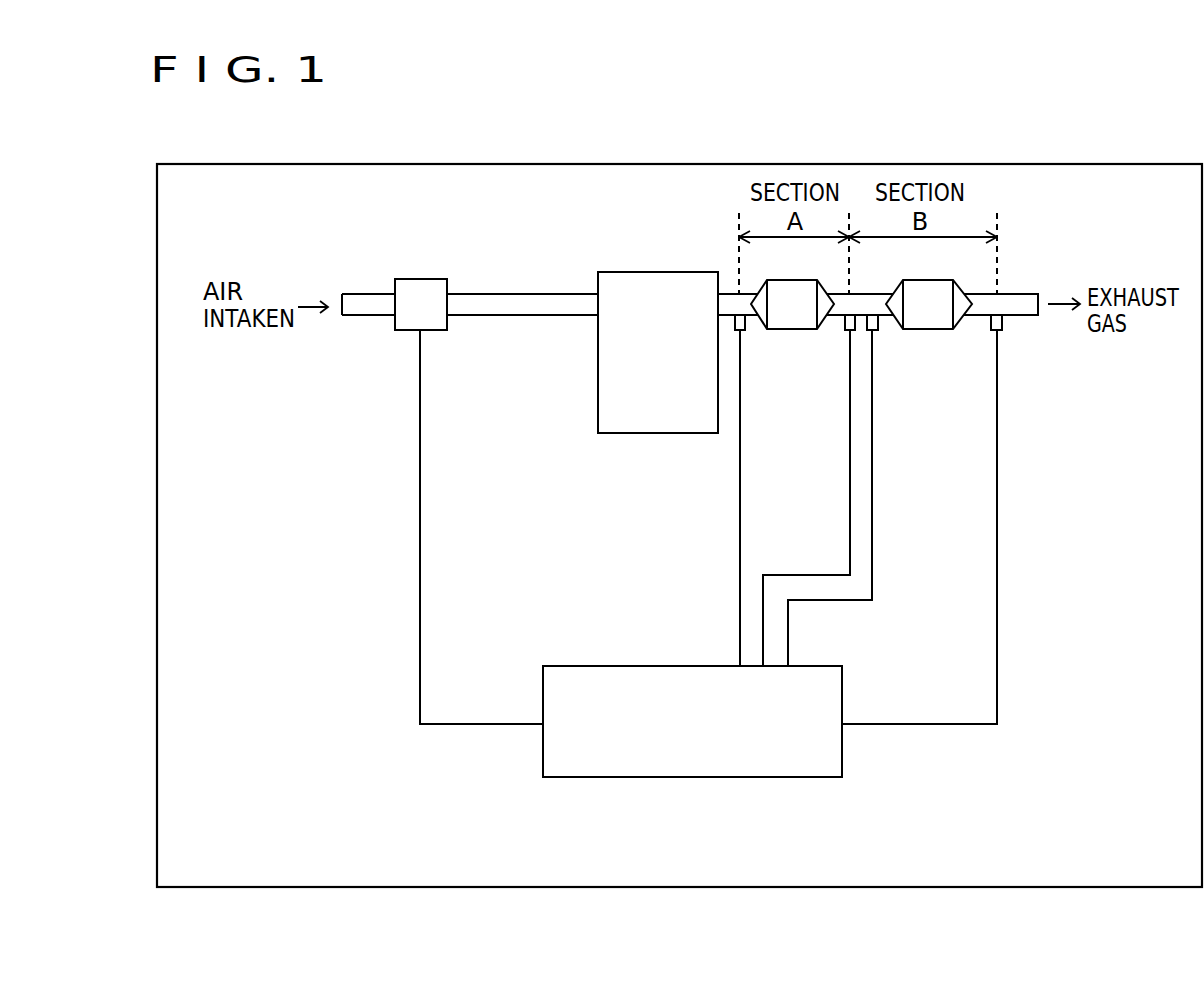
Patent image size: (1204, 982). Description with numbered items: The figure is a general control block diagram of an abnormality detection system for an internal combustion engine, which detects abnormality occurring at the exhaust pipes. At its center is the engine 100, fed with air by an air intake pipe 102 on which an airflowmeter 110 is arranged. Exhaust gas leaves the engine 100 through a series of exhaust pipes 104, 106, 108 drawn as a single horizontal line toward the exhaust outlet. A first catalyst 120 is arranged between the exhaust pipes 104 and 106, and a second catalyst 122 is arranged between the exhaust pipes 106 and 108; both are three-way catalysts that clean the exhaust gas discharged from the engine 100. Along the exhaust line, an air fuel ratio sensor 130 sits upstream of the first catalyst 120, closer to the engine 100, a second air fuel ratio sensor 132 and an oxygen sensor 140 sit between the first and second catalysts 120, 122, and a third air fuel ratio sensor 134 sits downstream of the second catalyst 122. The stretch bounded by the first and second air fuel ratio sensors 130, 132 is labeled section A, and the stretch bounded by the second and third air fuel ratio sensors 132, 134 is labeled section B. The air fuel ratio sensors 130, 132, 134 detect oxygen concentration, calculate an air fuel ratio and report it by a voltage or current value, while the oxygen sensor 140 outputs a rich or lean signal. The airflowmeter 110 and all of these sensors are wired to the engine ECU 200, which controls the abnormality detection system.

The engine 100 is at (645, 271).
The air intake pipe 102 is at (493, 294).
The exhaust pipe 104 is at (729, 294).
The exhaust pipe 106 is at (872, 292).
The exhaust pipe 108 is at (1016, 293).
The airflowmeter 110 is at (423, 280).
The first catalyst 120 is at (792, 330).
The second catalyst 122 is at (930, 332).
The air fuel ratio sensor 130 is at (747, 332).
The second air fuel ratio sensor 132 is at (847, 332).
The third air fuel ratio sensor 134 is at (1003, 332).
The oxygen sensor 140 is at (880, 332).
The engine electronic control unit (ECU) 200 is at (602, 666).